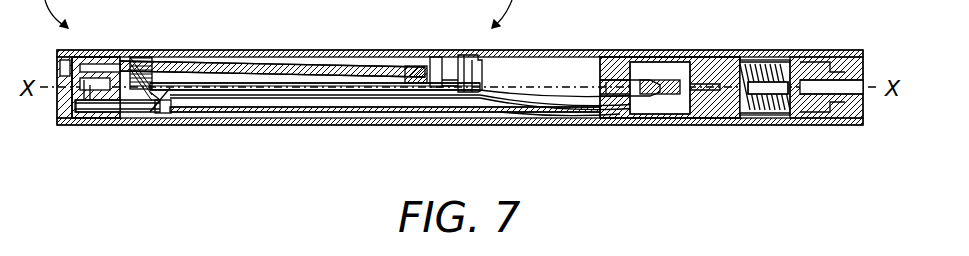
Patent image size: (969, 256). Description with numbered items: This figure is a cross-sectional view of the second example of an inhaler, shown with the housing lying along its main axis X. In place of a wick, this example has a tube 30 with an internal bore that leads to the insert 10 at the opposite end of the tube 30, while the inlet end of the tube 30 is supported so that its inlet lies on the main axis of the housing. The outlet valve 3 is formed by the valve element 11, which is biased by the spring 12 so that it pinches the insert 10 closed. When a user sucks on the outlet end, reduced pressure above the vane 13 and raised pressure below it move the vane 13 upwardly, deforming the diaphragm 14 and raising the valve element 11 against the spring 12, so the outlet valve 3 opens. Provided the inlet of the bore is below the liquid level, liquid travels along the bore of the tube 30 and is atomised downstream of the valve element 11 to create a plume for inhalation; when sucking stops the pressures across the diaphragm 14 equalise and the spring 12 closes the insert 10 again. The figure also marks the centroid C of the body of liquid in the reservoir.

The outlet valve 3 is at (160, 33).
The insert 10 is at (106, 118).
The valve element 11 is at (145, 116).
The spring 12 is at (140, 57).
The vane 13 is at (298, 60).
The diaphragm 14 is at (430, 70).
The tube 30 is at (522, 110).
The centroid C is at (624, 110).